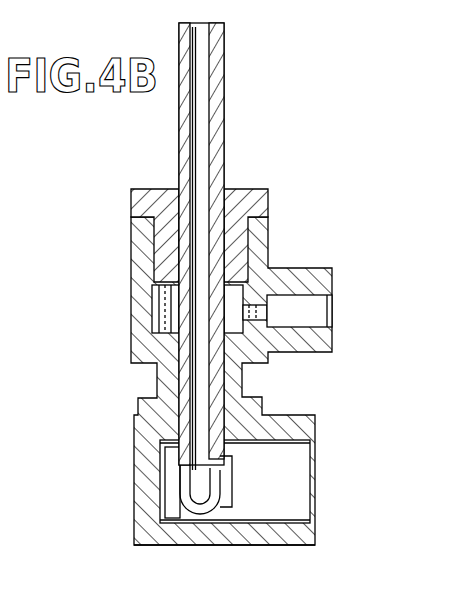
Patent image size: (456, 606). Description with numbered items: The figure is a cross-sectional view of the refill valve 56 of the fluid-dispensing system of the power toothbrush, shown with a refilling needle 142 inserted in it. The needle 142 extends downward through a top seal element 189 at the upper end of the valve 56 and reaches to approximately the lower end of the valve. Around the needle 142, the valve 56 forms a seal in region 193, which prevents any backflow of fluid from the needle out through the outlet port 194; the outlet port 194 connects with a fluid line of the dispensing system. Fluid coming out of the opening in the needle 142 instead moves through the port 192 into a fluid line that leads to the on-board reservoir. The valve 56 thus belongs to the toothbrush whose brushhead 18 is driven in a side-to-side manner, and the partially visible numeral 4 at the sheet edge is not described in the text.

The needle 142 is at (220, 87).
The top seal element 189 is at (223, 200).
The sealing region 193 is at (170, 372).
The outlet port 194 is at (333, 308).
The port 192 is at (317, 470).
The valve 56 is at (212, 548).
The brushhead 18 is at (273, 605).
The partial numeral 4 is at (14, 296).